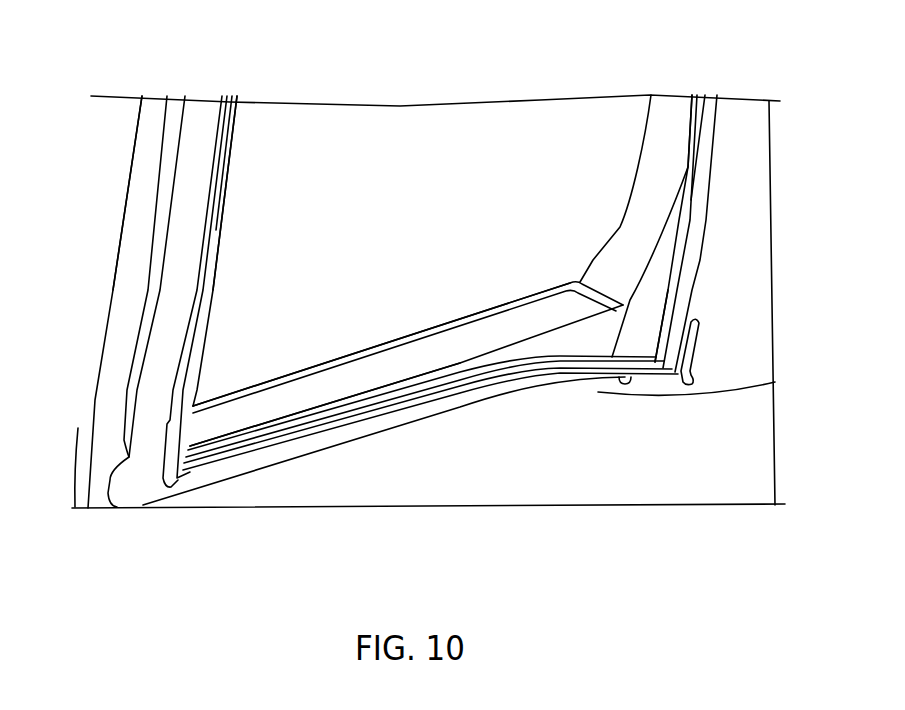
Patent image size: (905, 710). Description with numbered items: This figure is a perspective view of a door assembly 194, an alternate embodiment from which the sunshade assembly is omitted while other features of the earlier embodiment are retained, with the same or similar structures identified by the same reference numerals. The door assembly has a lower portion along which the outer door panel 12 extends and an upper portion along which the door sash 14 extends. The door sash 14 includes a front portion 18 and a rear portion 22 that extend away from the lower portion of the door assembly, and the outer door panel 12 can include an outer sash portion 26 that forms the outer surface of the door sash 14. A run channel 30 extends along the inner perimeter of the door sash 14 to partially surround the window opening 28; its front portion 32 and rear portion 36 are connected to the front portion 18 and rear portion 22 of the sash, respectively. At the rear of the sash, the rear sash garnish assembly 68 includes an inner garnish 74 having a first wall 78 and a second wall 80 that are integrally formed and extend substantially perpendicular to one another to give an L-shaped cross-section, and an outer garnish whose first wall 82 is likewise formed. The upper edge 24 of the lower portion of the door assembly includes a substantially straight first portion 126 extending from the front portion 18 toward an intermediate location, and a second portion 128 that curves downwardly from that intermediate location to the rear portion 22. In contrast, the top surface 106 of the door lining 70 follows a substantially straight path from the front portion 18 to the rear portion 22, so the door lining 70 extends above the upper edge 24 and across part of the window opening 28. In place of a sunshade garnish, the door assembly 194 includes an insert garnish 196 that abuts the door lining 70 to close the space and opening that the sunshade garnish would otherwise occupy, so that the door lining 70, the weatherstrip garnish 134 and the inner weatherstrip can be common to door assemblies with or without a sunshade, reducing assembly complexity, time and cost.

The door assembly 194 is at (476, 78).
The outer door panel 12 is at (483, 488).
The door sash 14 is at (788, 129).
The front portion 18 is at (195, 190).
The outer sash portion 26 is at (127, 193).
The run channel 30 is at (237, 148).
The front portion 32 is at (225, 193).
The rear portion 36 is at (700, 210).
The window opening 28 is at (402, 233).
The inner garnish 74 is at (657, 130).
The rear sash garnish assembly 68 is at (615, 170).
The second wall 80 is at (687, 167).
The first wall 78 is at (650, 292).
The first wall 82 is at (661, 326).
The rear portion 22 is at (733, 362).
The insert garnish 196 is at (497, 325).
The door lining 70 is at (343, 362).
The top surface 106 is at (278, 403).
The weatherstrip garnish 134 is at (570, 337).
The first portion 126 is at (300, 447).
The second portion 128 is at (597, 378).
The upper edge 24 is at (397, 410).